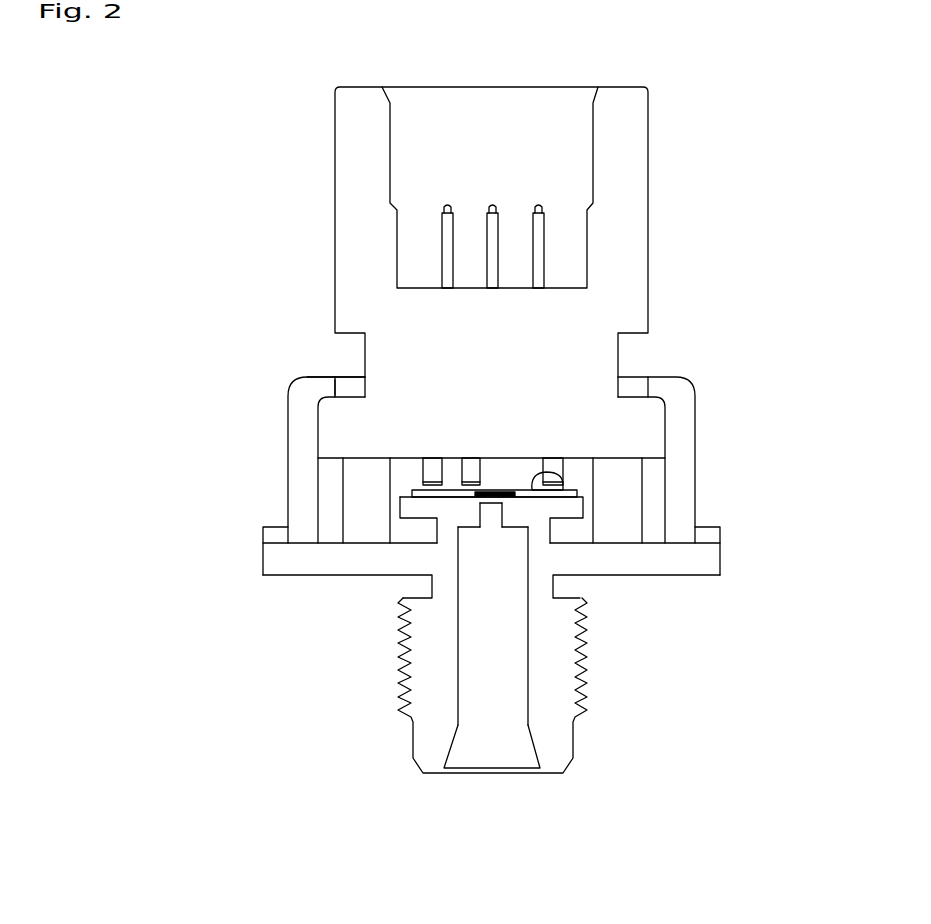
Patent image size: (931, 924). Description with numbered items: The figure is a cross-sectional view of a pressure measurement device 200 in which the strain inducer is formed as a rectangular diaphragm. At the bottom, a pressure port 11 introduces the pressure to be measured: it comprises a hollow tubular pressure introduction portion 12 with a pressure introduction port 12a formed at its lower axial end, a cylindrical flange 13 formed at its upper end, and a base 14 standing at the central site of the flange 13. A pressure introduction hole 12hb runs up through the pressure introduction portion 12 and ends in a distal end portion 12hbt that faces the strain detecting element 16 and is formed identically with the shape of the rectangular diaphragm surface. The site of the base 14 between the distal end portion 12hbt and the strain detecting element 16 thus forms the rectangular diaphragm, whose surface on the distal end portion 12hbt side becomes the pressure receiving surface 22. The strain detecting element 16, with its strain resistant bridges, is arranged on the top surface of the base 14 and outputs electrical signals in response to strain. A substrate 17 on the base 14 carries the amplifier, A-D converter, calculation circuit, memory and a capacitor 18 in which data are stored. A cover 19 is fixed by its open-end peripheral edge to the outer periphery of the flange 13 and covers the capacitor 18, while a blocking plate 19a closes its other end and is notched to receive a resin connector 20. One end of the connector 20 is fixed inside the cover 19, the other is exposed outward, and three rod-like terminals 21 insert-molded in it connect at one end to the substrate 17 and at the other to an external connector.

The pressure measurement device 200 is at (318, 133).
The connector 20 is at (638, 150).
The terminals 21 is at (538, 208).
The cover 19 is at (678, 503).
The blocking plate 19a is at (348, 382).
The substrate 17 is at (408, 493).
The strain detecting element 16 is at (495, 492).
The capacitor 18 is at (552, 482).
The base 14 is at (407, 510).
The pressure receiving surface 22 is at (497, 506).
The distal end portion 12hbt is at (490, 505).
The flange 13 is at (275, 562).
The pressure port 11 is at (322, 565).
The pressure introduction portion 12 is at (547, 690).
The pressure introduction hole 12hb is at (458, 703).
The pressure introduction port 12a is at (488, 773).